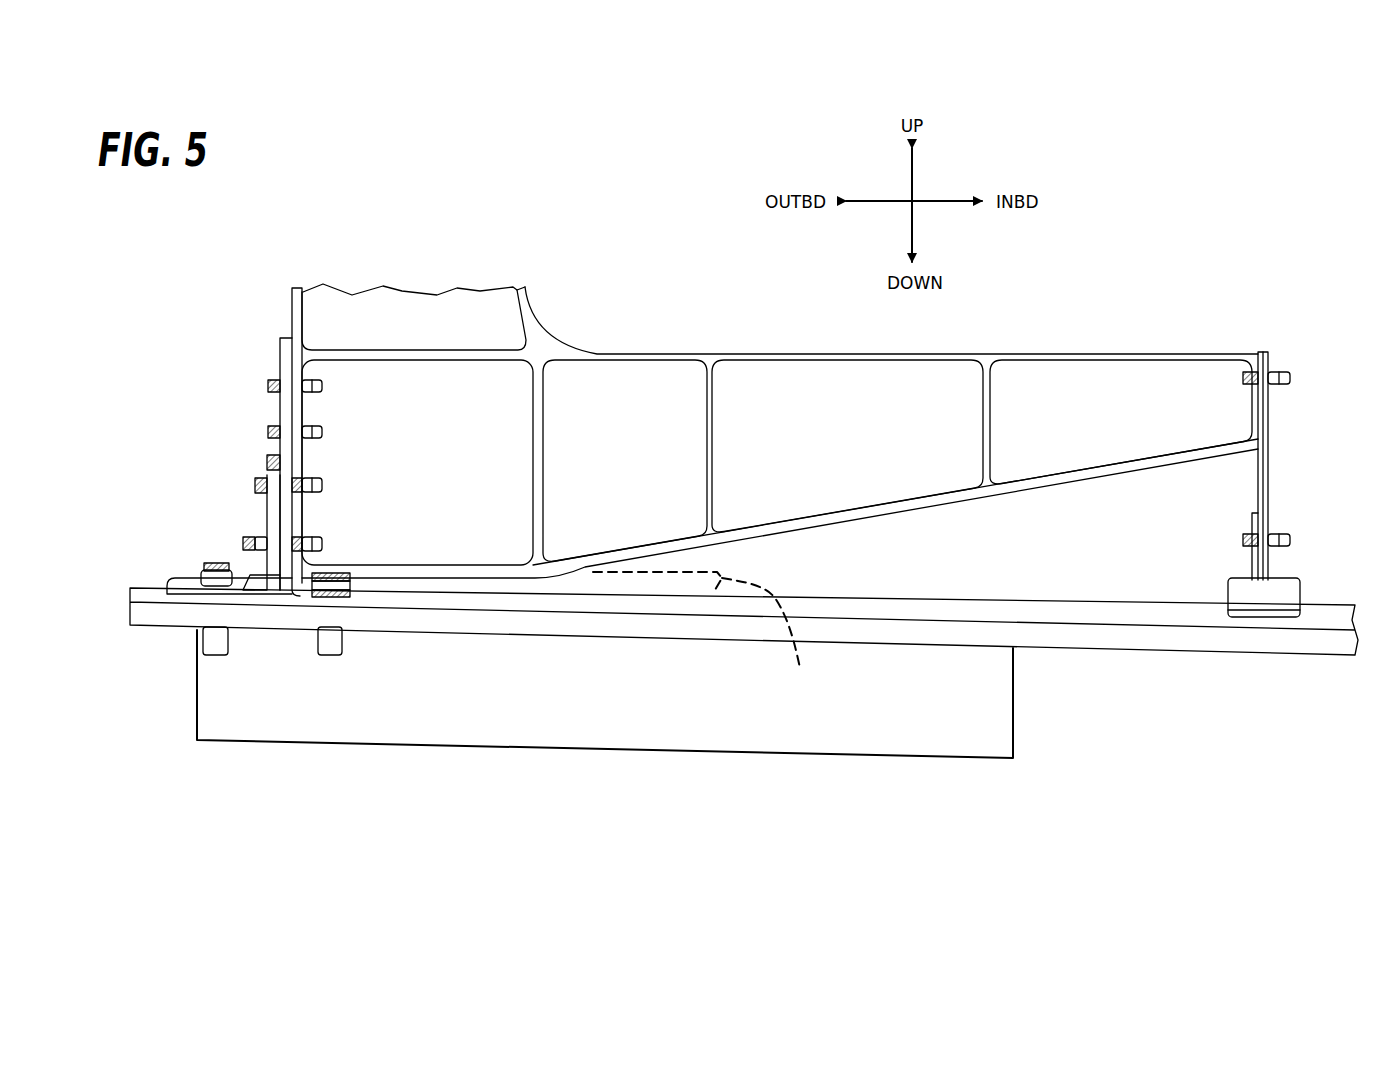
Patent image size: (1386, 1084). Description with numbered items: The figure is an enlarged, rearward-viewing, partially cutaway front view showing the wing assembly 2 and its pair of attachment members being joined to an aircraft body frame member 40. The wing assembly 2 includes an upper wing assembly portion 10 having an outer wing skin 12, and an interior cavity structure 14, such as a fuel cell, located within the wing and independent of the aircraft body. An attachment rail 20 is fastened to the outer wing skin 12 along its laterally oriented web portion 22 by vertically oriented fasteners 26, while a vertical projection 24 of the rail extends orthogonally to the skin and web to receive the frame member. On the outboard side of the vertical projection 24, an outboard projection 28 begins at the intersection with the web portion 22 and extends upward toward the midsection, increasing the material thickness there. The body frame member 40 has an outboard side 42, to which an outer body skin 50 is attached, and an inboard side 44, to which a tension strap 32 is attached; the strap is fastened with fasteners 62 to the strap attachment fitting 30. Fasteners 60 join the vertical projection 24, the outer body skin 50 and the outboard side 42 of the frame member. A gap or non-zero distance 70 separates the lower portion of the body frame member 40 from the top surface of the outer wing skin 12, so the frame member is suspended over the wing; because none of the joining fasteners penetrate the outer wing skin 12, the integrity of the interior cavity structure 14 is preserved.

The wing assembly 2 is at (186, 642).
The upper wing assembly portion 10 is at (288, 230).
The outer wing skin 12 is at (168, 588).
The interior cavity structure 14 is at (605, 694).
The attachment rail 20 is at (273, 477).
The web portion 22 is at (188, 580).
The vertical projection 24 is at (272, 462).
The fasteners 26 is at (328, 594).
The outboard projection 28 is at (257, 540).
The strap attachment fitting 30 is at (1263, 595).
The tension strap 32 is at (1265, 455).
The body frame member 40 is at (768, 410).
The outboard side 42 is at (292, 312).
The inboard side 44 is at (1257, 352).
The outer body skin 50 is at (285, 407).
The fasteners 60 is at (318, 485).
The fasteners 62 is at (1243, 537).
The non-zero distance 70 is at (706, 630).